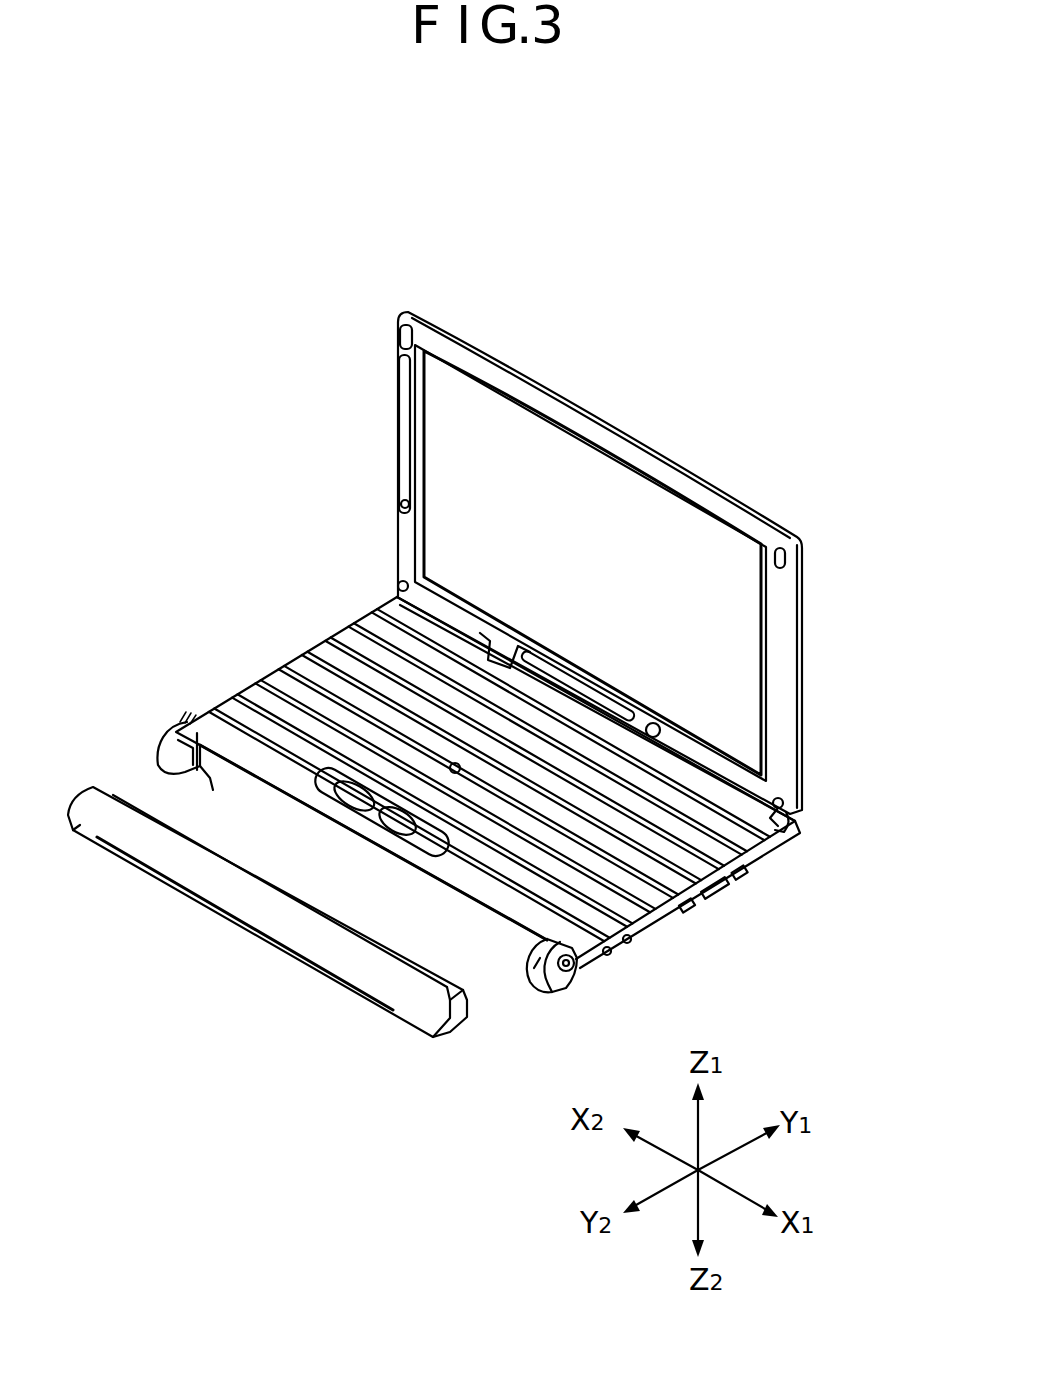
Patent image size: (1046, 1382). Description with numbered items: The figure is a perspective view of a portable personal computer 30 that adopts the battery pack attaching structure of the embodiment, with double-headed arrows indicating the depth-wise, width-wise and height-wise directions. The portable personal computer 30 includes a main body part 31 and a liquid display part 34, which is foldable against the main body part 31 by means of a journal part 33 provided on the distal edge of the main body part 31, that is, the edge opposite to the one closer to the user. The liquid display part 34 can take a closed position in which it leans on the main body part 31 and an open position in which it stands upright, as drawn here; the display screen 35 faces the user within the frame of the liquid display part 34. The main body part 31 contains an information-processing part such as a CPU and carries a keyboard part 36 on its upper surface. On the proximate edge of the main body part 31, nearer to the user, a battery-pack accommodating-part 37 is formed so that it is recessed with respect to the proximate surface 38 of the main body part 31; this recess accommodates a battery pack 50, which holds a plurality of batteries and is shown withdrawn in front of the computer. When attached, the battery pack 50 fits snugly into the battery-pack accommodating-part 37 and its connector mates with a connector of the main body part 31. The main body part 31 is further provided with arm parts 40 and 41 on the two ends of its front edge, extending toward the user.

The portable personal computer 30 is at (732, 318).
The main body part 31 is at (268, 660).
The journal part 33 is at (785, 803).
The liquid display part 34 is at (797, 590).
The display screen 35 is at (433, 413).
The keyboard part 36 is at (365, 640).
The battery-pack accommodating-part 37 is at (216, 772).
The proximate surface 38 is at (530, 962).
The arm part 40 is at (577, 967).
The arm part 41 is at (187, 717).
The battery pack 50 is at (343, 1005).